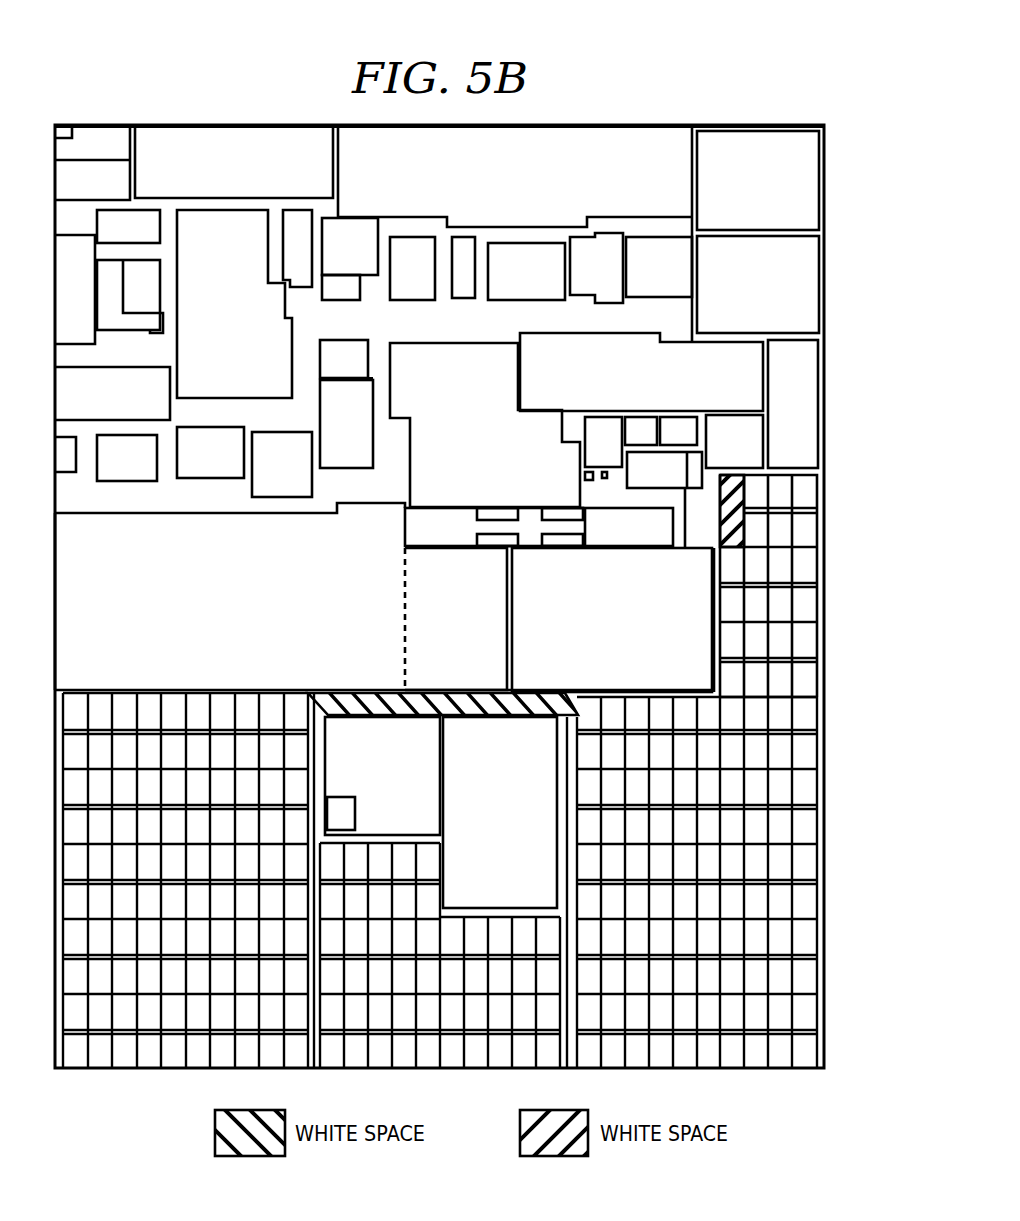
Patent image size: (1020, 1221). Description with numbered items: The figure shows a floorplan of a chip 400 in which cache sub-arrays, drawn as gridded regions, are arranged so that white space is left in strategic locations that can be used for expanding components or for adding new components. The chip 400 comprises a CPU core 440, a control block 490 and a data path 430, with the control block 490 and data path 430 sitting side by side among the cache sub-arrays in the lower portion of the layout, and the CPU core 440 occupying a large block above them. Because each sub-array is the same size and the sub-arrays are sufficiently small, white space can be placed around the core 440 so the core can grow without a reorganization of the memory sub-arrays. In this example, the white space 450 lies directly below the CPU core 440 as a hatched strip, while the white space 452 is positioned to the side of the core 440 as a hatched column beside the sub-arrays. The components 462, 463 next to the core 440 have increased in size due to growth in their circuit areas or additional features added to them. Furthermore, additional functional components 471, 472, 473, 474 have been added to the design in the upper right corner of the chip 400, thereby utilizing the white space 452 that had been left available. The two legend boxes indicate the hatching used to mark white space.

The chip 400 is at (258, 97).
The data path 430 is at (521, 858).
The CPU core 440 is at (255, 616).
The white space 450 is at (350, 700).
The white space 452 is at (740, 535).
The component 462 is at (636, 634).
The component 463 is at (480, 634).
The additional functional component 471 is at (783, 196).
The additional functional component 472 is at (783, 299).
The additional functional component 473 is at (814, 397).
The additional functional component 474 is at (735, 413).
The control block 490 is at (407, 807).